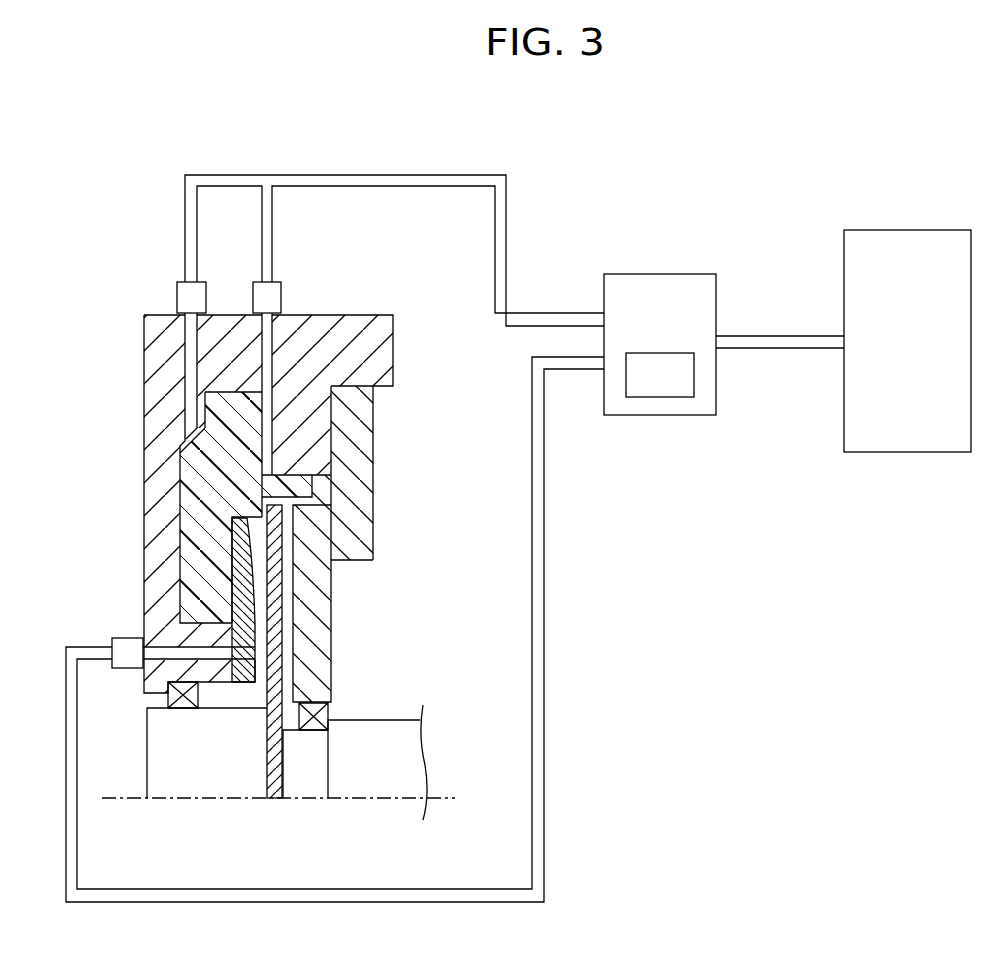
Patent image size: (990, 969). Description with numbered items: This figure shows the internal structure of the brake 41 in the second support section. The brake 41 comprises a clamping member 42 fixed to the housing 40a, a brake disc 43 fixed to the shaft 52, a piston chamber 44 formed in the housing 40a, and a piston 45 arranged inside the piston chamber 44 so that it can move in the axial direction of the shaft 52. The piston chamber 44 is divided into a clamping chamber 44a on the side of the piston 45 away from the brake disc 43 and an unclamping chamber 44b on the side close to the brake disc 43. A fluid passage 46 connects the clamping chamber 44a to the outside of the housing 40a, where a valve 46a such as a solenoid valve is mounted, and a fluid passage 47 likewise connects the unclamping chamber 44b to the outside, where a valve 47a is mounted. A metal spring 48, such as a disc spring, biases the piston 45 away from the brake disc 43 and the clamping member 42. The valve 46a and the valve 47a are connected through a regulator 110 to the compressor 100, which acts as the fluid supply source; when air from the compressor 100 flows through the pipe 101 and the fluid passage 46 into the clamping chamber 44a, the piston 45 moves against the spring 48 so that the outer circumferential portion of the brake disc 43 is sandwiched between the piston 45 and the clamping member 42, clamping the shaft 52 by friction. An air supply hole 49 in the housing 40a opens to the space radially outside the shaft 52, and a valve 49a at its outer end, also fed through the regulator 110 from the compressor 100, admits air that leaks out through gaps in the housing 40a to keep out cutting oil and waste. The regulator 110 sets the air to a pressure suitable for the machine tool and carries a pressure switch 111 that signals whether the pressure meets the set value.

The brake 41 is at (160, 253).
The housing 40a is at (363, 314).
The clamping member 42 is at (375, 533).
The brake disc 43 is at (281, 595).
The piston chamber 44 is at (241, 395).
The clamping chamber 44a is at (210, 410).
The unclamping chamber 44b is at (272, 417).
The piston 45 is at (195, 493).
The fluid passage 46 is at (193, 348).
The valve 46a is at (177, 294).
The fluid passage 47 is at (268, 343).
The valve 47a is at (282, 293).
The spring 48 is at (240, 563).
The air supply hole 49 is at (172, 652).
The valve 49a is at (117, 670).
The shaft 52 is at (205, 773).
The compressor 100 is at (905, 229).
The pipe 101 is at (438, 174).
The regulator 110 is at (654, 273).
The pressure switch 111 is at (659, 398).